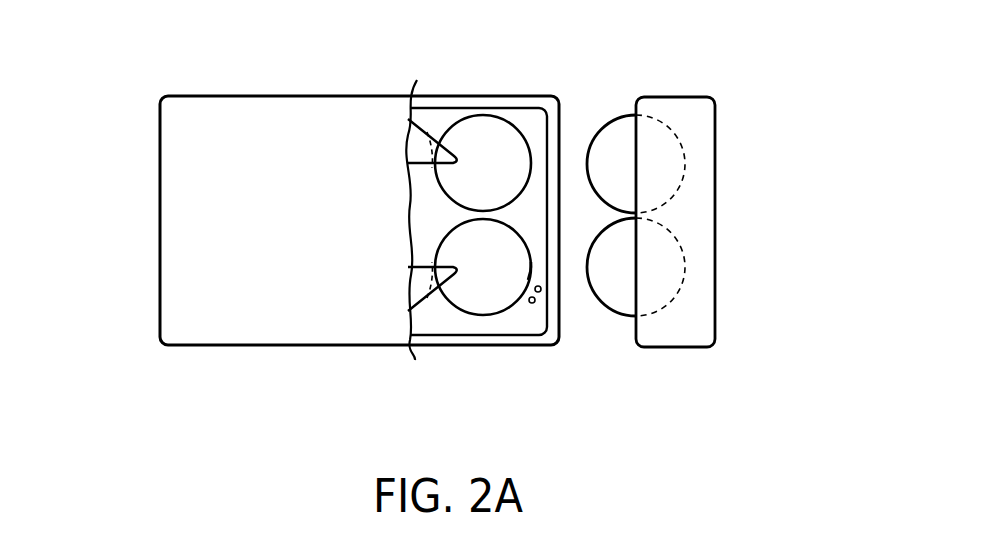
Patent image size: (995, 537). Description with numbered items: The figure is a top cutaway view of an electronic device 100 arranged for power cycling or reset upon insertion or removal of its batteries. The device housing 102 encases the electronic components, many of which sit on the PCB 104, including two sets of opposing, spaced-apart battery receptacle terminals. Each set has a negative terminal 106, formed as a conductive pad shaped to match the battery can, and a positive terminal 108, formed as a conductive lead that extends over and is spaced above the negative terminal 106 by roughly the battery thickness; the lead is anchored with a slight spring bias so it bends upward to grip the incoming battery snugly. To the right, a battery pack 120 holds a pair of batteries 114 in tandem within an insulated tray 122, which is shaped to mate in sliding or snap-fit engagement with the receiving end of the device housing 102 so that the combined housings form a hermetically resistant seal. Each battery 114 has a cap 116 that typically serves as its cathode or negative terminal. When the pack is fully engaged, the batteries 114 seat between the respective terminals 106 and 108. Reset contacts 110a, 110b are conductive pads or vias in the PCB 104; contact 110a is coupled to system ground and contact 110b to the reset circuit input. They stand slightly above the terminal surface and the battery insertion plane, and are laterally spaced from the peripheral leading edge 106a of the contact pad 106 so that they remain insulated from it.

The electronic device 100 is at (141, 58).
The device housing 102 is at (303, 118).
The PCB 104 is at (531, 121).
The negative terminal 106 is at (479, 124).
The peripheral leading edge 106a is at (533, 270).
The positive terminal 108 is at (423, 130).
The reset contact 110a is at (532, 303).
The reset contact 110b is at (541, 290).
The battery 114 is at (670, 152).
The cap 116 is at (606, 128).
The battery pack 120 is at (676, 72).
The tray 122 is at (702, 190).